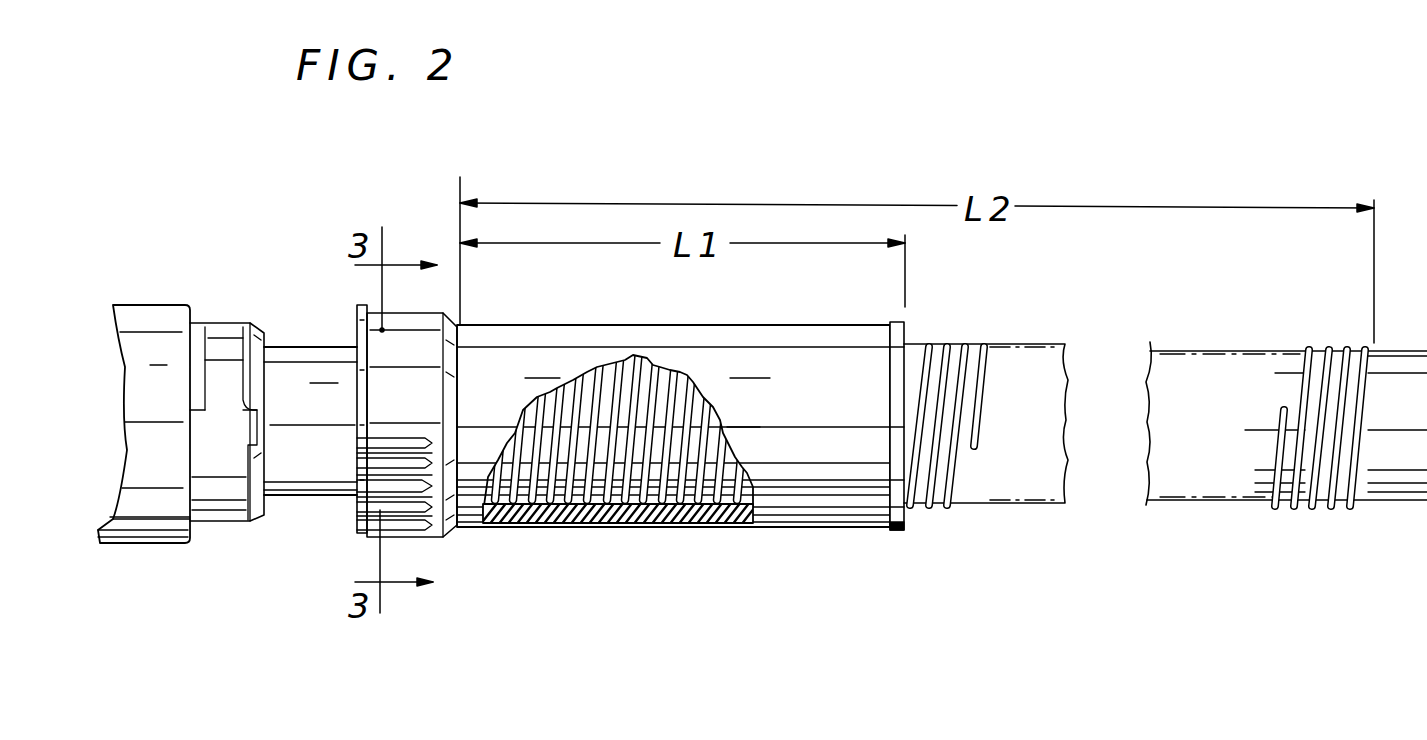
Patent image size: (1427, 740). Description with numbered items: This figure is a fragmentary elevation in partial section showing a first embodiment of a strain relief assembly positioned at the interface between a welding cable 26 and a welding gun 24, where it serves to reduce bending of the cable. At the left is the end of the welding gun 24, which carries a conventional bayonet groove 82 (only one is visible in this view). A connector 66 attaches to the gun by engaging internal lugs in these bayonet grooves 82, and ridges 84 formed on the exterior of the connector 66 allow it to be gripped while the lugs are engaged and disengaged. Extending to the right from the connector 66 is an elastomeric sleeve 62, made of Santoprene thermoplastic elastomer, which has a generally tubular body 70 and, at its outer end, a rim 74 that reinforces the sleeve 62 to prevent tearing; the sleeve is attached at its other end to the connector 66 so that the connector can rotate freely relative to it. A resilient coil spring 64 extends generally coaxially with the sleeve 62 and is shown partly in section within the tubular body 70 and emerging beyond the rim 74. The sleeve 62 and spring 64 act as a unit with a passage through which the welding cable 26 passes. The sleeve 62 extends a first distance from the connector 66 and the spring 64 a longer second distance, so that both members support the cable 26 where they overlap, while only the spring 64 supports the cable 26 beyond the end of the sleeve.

The welding gun 24 is at (123, 545).
The bayonet grooves 82 is at (218, 441).
The ridges 84 is at (380, 510).
The connector 66 is at (406, 472).
The tubular body 70 is at (602, 523).
The elastomeric sleeve 62 is at (798, 525).
The rim 74 is at (892, 530).
The resilient coil spring 64 is at (942, 510).
The welding cable 26 is at (1393, 504).